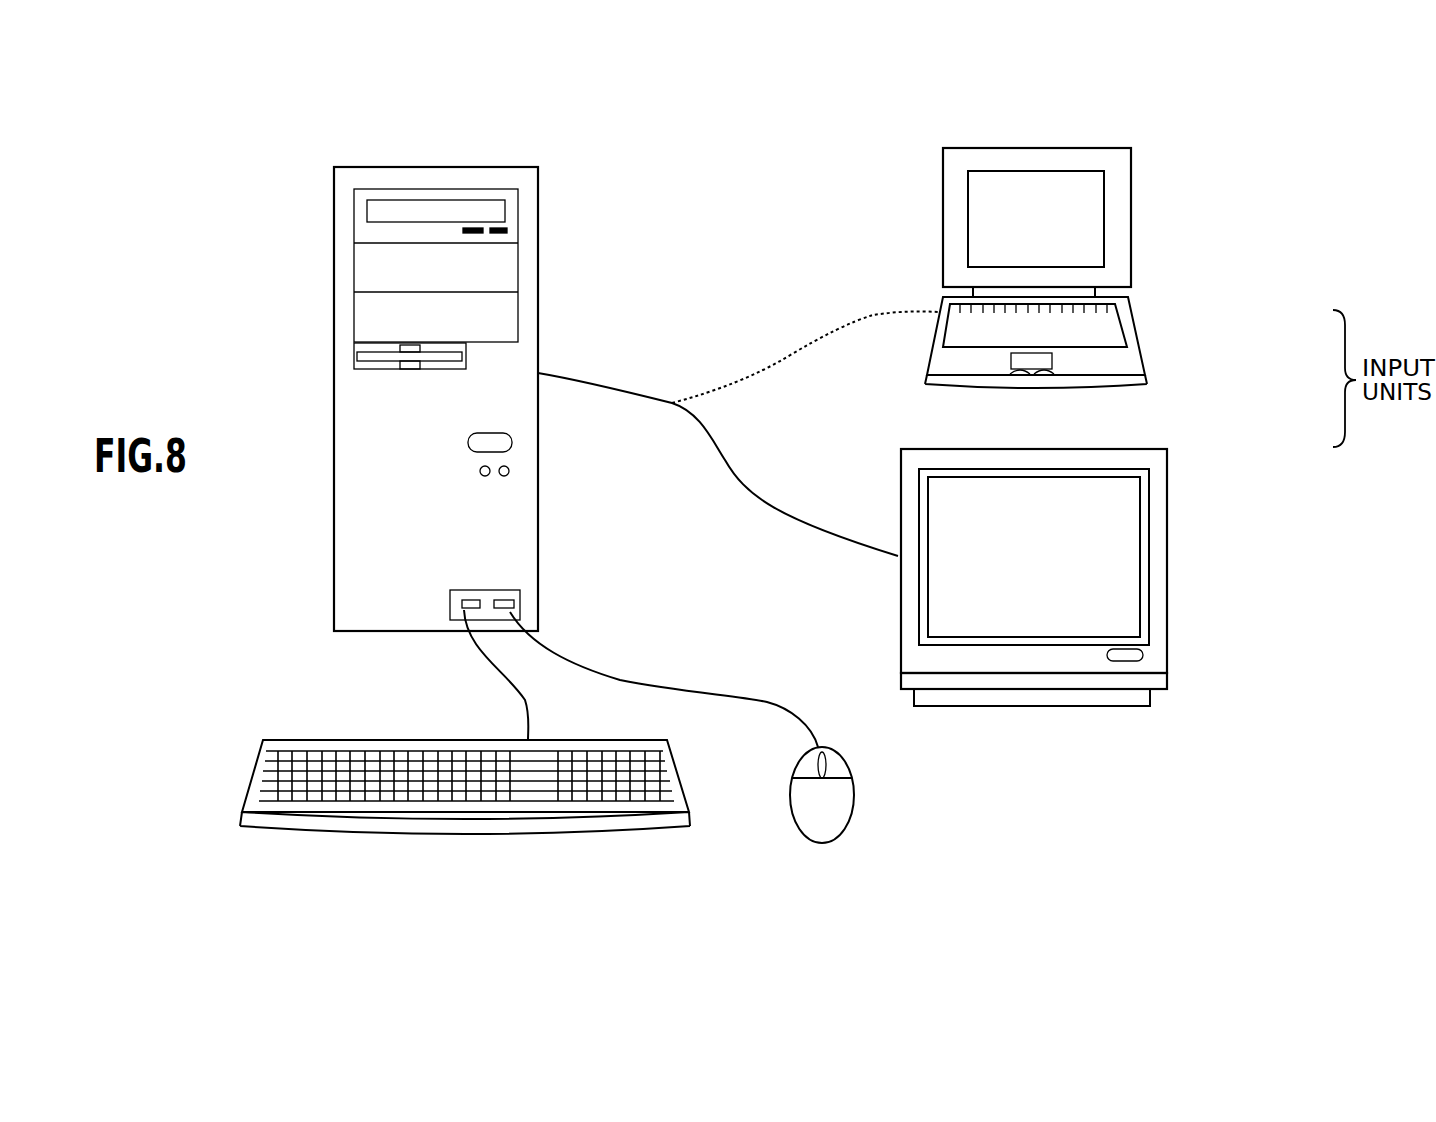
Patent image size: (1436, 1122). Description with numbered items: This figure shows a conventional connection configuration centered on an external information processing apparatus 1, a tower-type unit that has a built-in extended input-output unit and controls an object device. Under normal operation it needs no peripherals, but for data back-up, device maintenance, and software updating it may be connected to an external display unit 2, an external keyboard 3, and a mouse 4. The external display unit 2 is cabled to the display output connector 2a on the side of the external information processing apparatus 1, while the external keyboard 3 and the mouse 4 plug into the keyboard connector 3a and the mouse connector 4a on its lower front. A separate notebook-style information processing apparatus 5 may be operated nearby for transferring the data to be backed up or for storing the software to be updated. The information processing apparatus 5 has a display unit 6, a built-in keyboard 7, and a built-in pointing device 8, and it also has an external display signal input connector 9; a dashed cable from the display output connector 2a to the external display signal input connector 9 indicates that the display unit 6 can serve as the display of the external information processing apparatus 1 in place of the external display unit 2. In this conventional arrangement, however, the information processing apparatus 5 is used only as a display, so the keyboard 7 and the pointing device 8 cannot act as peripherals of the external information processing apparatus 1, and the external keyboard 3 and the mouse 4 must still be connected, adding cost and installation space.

The external information processing apparatus 1 is at (387, 165).
The external display unit 2 is at (985, 707).
The display output connector 2a is at (718, 434).
The external keyboard 3 is at (404, 838).
The keyboard connector 3a is at (460, 601).
The mouse 4 is at (817, 843).
The mouse connector 4a is at (513, 598).
The information processing apparatus 5 is at (1008, 142).
The display unit 6 is at (1073, 208).
The keyboard 7 is at (1098, 325).
The pointing device 8 is at (1043, 358).
The external display signal input connector 9 is at (938, 312).